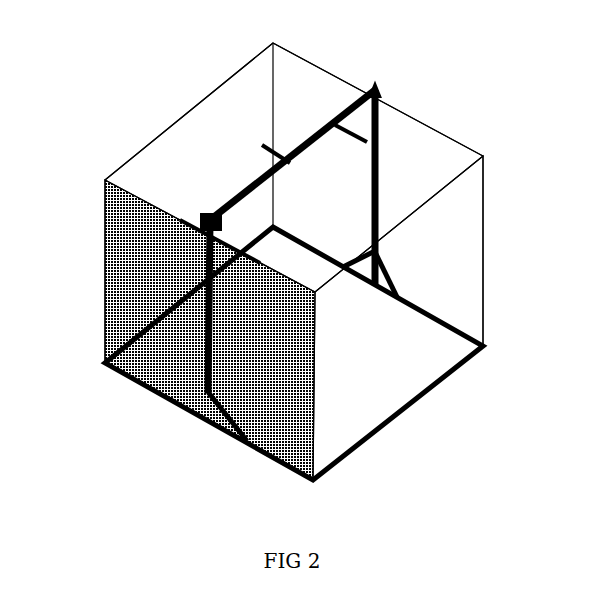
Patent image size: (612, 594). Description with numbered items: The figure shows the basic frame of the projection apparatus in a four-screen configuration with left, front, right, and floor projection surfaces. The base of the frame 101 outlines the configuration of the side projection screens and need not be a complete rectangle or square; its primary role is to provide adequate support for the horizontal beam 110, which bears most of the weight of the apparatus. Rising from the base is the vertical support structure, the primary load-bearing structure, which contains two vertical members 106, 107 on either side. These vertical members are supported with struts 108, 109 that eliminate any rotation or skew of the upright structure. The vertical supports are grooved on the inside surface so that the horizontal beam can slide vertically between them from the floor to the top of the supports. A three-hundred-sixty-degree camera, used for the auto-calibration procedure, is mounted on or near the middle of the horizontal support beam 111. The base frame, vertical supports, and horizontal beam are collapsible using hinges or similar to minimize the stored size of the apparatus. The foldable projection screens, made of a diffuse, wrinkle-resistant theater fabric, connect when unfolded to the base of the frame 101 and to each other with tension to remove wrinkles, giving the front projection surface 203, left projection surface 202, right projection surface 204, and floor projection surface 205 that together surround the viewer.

The base of the frame 101 is at (467, 362).
The vertical member 106 is at (387, 193).
The vertical member 107 is at (205, 262).
The strut 108 is at (152, 388).
The strut 109 is at (410, 282).
The horizontal beam 110 is at (383, 113).
The horizontal support beam 111 is at (267, 157).
The left projection surface 202 is at (142, 292).
The front projection surface 203 is at (230, 102).
The right projection surface 204 is at (317, 80).
The floor projection surface 205 is at (397, 367).